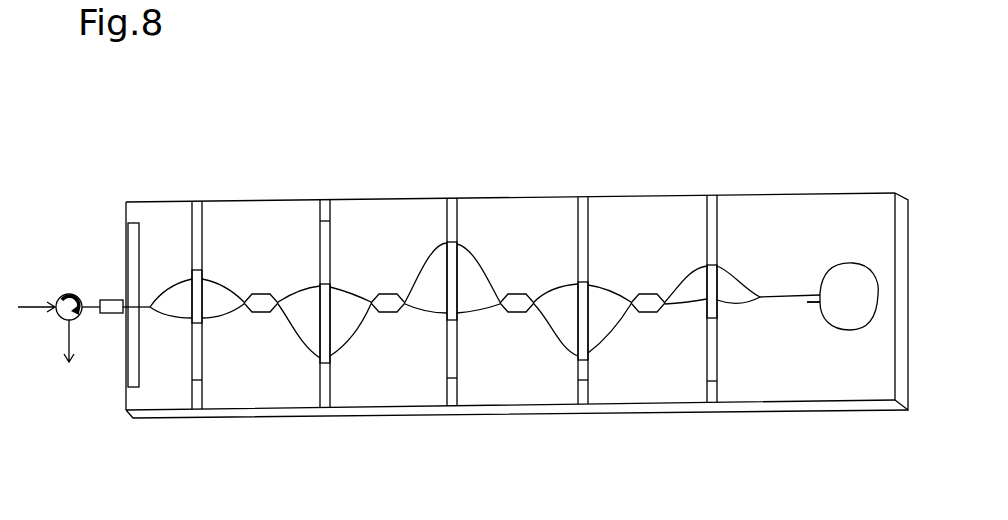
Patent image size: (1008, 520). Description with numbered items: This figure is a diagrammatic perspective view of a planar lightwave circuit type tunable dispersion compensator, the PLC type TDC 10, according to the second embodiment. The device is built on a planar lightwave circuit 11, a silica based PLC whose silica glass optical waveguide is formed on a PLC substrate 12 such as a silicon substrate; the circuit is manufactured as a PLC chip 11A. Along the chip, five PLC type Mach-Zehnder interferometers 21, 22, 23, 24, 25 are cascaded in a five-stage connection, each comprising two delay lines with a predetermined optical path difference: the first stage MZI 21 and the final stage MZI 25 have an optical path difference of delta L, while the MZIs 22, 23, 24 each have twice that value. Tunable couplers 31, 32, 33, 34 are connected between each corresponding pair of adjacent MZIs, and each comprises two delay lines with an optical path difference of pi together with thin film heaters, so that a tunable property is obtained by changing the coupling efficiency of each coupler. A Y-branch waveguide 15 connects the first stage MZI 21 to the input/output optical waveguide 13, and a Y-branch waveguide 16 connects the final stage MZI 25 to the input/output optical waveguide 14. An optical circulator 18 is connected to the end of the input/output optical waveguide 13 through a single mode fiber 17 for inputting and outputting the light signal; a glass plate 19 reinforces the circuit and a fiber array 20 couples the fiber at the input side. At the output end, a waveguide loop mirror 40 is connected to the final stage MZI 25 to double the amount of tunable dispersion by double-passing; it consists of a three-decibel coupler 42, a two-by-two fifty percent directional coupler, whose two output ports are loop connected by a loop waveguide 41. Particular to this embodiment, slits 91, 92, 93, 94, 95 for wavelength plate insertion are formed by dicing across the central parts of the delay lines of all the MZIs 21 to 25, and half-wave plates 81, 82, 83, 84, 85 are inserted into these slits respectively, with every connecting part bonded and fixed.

The PLC type TDC 10 is at (500, 158).
The planar lightwave circuit 11 is at (495, 250).
The PLC chip 11A is at (373, 190).
The PLC substrate 12 is at (310, 420).
The input/output optical waveguide 13 is at (138, 313).
The input/output optical waveguide 14 is at (778, 297).
The Y-branch waveguide 15 is at (157, 310).
The Y-branch waveguide 16 is at (762, 296).
The single mode fiber 17 is at (92, 303).
The optical circulator 18 is at (66, 293).
The glass plate 19 is at (140, 386).
The fiber array 20 is at (112, 298).
The Mach-Zehnder interferometer 21 is at (232, 323).
The Mach-Zehnder interferometer 22 is at (296, 282).
The Mach-Zehnder interferometer 23 is at (422, 327).
The Mach-Zehnder interferometer 24 is at (560, 353).
The Mach-Zehnder interferometer 25 is at (697, 262).
The tunable coupler 31 is at (252, 291).
The tunable coupler 32 is at (382, 291).
The tunable coupler 33 is at (518, 291).
The tunable coupler 34 is at (642, 291).
The waveguide loop mirror 40 is at (820, 321).
The loop waveguide 41 is at (850, 330).
The 3 dB coupler 42 is at (818, 288).
The half-wave plate 81 is at (203, 293).
The half-wave plate 82 is at (330, 338).
The half-wave plate 83 is at (458, 312).
The half-wave plate 84 is at (588, 335).
The half-wave plate 85 is at (713, 295).
The slit 91 is at (200, 383).
The slit 92 is at (327, 221).
The slit 93 is at (447, 378).
The slit 94 is at (587, 380).
The slit 95 is at (710, 381).